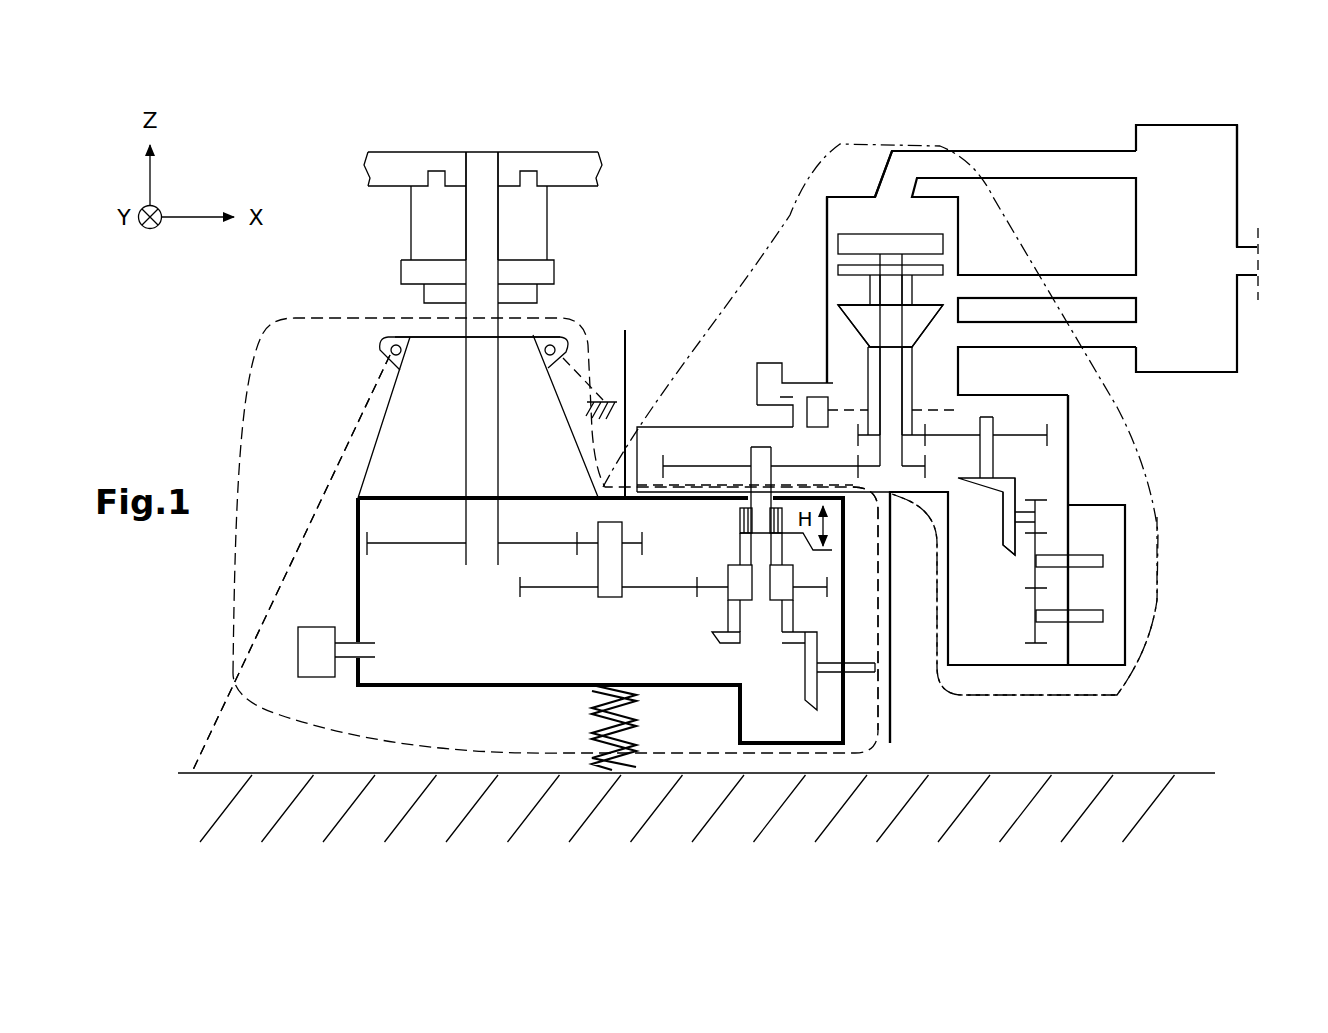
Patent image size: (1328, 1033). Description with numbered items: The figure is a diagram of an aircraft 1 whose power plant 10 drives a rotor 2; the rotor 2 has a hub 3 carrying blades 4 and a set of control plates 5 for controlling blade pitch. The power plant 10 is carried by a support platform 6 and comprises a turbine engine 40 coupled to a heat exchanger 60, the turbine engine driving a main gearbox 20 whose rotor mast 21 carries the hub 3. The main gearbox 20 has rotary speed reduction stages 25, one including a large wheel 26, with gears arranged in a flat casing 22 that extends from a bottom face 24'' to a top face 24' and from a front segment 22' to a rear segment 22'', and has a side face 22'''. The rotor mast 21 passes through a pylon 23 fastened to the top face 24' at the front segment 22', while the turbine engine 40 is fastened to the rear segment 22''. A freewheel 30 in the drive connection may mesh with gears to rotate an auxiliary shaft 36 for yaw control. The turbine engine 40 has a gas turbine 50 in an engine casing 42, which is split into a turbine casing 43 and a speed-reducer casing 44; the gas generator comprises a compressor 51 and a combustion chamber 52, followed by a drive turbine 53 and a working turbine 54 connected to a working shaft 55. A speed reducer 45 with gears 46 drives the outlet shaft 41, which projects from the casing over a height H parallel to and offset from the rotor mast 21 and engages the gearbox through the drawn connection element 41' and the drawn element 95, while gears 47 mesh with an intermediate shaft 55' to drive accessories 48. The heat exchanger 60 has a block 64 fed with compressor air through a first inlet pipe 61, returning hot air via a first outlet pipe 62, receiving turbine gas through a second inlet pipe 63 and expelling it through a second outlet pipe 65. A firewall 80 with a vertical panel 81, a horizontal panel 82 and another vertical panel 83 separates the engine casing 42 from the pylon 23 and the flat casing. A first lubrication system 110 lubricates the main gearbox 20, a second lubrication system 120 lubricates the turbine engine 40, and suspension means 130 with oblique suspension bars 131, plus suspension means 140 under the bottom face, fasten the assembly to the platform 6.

The aircraft 1 is at (962, 100).
The rotor 2 is at (608, 121).
The hub 3 is at (458, 152).
The blades 4 is at (392, 170).
The control plates 5 is at (381, 289).
The support platform 6 is at (590, 404).
The power plant 10 is at (1092, 130).
The main gearbox 20 is at (232, 392).
The rotor mast 21 is at (466, 435).
The flat casing 22 is at (600, 623).
The front segment 22' is at (498, 722).
The rear segment 22'' is at (791, 819).
The side face 22''' is at (884, 696).
The pylon 23 is at (383, 437).
The top face 24' is at (763, 443).
The bottom face 24'' is at (549, 716).
The rotary speed reduction stage 25 is at (410, 555).
The large wheel 26 is at (442, 540).
The freewheel 30 is at (722, 548).
The auxiliary shaft 36 is at (855, 673).
The turbine engine 40 is at (1157, 517).
The outlet shaft 41 is at (777, 472).
The gear wheel 41' is at (758, 608).
The engine casing 42 is at (1073, 461).
The turbine casing 43 is at (826, 338).
The speed-reducer casing 44 is at (1070, 402).
The speed reducer 45 is at (988, 552).
The gears 46 is at (842, 466).
The gears 47 is at (990, 508).
The accessories 48 is at (1097, 503).
The gas turbine 50 is at (845, 220).
The compressor 51 is at (827, 308).
The combustion chamber 52 is at (838, 270).
The drive turbine 53 is at (826, 240).
The working turbine 54 is at (863, 245).
The working shaft 55 is at (915, 360).
The intermediate shaft 55' is at (872, 391).
The heat exchanger 60 is at (1217, 115).
The first inlet pipe 61 is at (1053, 348).
The first outlet pipe 62 is at (1057, 270).
The second inlet pipe 63 is at (1066, 150).
The heat exchanger block 64 is at (1238, 152).
The second outlet pipe 65 is at (1249, 233).
The firewall 80 is at (632, 330).
The vertical panel 81 is at (625, 372).
The horizontal panel 82 is at (853, 494).
The vertical panel 83 is at (900, 605).
The bearing 95 is at (727, 520).
The first lubrication system 110 is at (300, 627).
The second lubrication system 120 is at (780, 360).
The suspension means 130 is at (208, 733).
The suspension bars 131 is at (580, 337).
The suspension means 140 is at (637, 707).